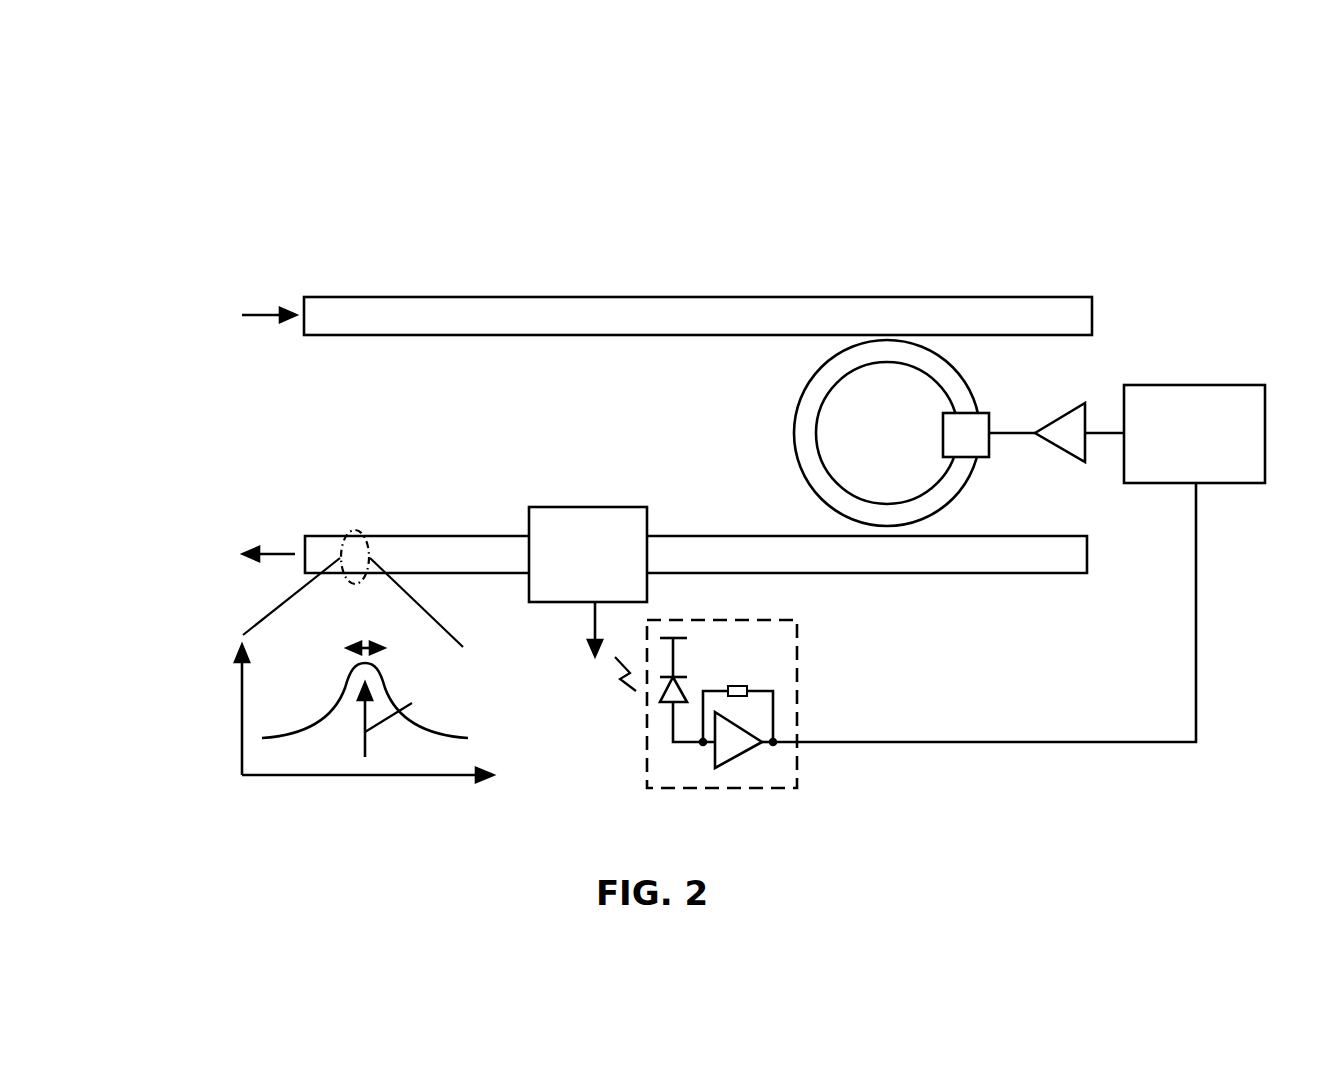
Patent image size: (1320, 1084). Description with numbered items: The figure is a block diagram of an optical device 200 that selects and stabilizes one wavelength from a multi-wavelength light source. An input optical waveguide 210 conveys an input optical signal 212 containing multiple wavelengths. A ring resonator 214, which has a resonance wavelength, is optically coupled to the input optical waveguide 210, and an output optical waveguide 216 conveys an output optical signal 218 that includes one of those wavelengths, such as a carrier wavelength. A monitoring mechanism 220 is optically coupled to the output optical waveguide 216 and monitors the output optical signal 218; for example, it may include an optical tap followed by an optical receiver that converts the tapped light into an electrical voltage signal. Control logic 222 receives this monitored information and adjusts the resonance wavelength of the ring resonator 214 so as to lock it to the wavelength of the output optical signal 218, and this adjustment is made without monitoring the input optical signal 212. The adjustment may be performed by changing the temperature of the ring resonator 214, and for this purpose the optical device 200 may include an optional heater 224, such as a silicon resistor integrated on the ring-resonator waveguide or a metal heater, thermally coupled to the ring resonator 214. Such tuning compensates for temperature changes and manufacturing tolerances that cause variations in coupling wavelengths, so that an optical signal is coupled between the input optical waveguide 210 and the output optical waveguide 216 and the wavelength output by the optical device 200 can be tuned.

The optical device 200 is at (967, 177).
The input optical waveguide 210 is at (465, 315).
The input optical signal 212 is at (268, 315).
The ring resonator 214 is at (810, 466).
The output optical waveguide 216 is at (483, 555).
The output optical signal 218 is at (275, 554).
The monitoring mechanism 220 is at (797, 772).
The control logic 222 is at (1180, 472).
The heater 224 is at (972, 440).